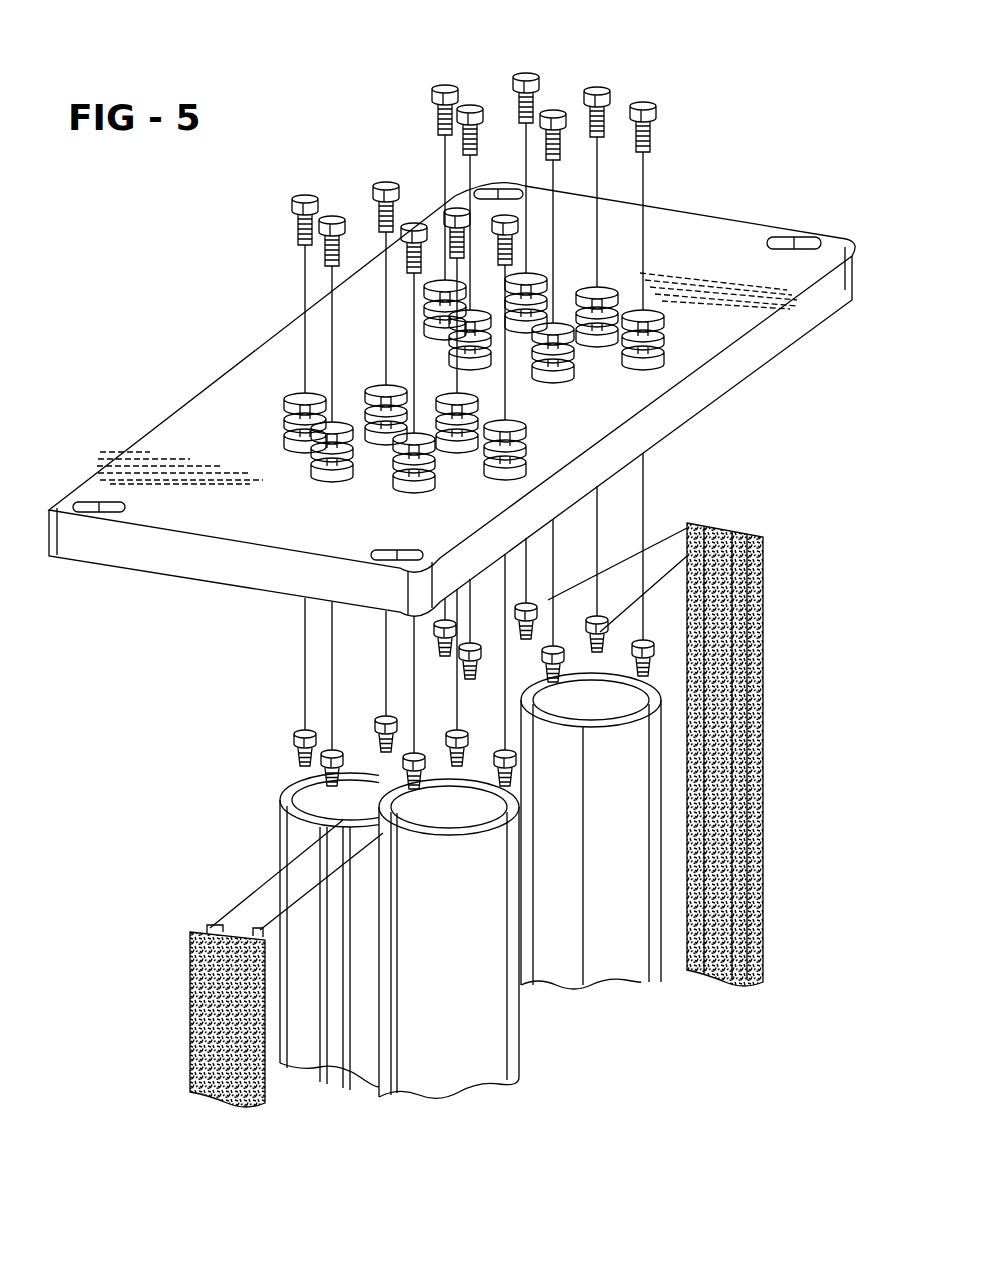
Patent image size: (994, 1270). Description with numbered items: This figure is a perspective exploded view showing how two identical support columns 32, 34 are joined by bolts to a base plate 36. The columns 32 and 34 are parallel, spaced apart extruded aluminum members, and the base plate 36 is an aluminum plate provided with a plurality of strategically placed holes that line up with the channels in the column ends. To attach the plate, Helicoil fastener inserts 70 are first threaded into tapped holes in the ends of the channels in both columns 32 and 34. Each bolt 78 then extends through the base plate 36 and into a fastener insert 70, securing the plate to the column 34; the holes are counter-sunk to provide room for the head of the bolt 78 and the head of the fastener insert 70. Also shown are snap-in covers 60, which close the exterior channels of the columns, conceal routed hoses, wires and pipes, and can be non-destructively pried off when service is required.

The column 32 is at (498, 1060).
The column 34 is at (627, 972).
The base plate 36 is at (198, 431).
The cover 60 is at (190, 1000).
The fastener insert 70 is at (293, 745).
The bolt 78 is at (612, 97).